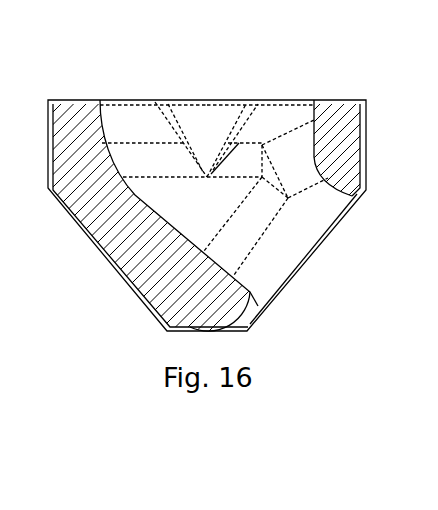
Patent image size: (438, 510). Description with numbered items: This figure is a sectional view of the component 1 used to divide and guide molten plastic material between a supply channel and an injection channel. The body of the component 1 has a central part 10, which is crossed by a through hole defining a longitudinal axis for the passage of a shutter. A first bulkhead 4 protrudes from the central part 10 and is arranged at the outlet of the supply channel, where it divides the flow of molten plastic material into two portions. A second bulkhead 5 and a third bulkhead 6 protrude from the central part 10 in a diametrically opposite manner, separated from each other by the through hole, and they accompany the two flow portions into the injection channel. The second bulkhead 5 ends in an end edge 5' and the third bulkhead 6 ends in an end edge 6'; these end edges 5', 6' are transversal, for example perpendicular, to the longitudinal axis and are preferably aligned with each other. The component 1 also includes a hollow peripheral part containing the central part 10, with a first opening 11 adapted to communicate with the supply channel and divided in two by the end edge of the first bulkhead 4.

The component 1 is at (368, 70).
The first bulkhead 4 is at (275, 258).
The second bulkhead 5 is at (132, 110).
The end edge 5' is at (152, 60).
The third bulkhead 6 is at (267, 112).
The end edge 6' is at (282, 57).
The central part 10 is at (216, 220).
The first opening 11 is at (340, 221).